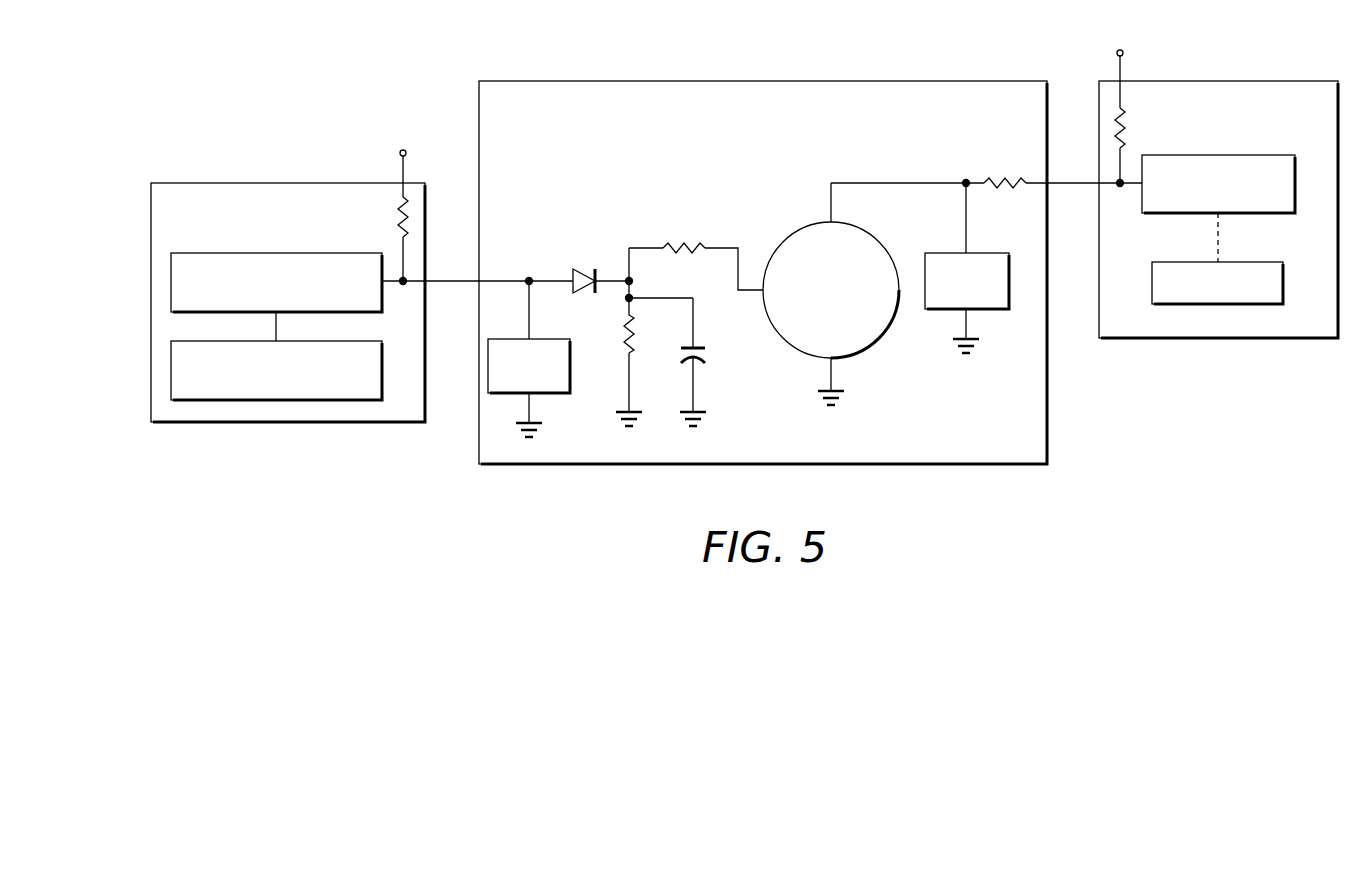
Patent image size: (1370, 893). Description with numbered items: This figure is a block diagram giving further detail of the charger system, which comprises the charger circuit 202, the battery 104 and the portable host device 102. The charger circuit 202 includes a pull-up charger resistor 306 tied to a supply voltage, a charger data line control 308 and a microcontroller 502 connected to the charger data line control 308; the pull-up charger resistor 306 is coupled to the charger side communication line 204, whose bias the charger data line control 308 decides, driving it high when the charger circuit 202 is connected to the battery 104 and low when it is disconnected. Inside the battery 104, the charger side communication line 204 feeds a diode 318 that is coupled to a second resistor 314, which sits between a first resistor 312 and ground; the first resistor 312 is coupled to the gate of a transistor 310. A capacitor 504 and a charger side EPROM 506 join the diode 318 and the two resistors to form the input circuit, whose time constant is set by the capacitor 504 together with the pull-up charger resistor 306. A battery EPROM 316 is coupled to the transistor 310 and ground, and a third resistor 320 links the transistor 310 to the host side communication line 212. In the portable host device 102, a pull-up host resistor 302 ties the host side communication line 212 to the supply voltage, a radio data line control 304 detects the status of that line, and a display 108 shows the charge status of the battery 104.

The portable host device 102 is at (1318, 81).
The battery 104 is at (763, 81).
The display 108 is at (1268, 262).
The charger circuit 202 is at (164, 183).
The charger side communication line 204 is at (451, 277).
The host side communication line 212 is at (1072, 178).
The pull-up host resistor 302 is at (1125, 118).
The radio data line control 304 is at (1280, 155).
The pull-up charger resistor 306 is at (397, 224).
The charger data line control 308 is at (304, 253).
The transistor Q1 310 is at (796, 232).
The first resistor R1 312 is at (689, 253).
The second resistor R2 314 is at (627, 352).
The battery EPROM U2 316 is at (934, 253).
The diode D1 318 is at (583, 291).
The third resistor R3 320 is at (1002, 190).
The microcontroller 502 is at (357, 341).
The capacitor C1 504 is at (702, 348).
The charger side EPROM U1 506 is at (557, 394).